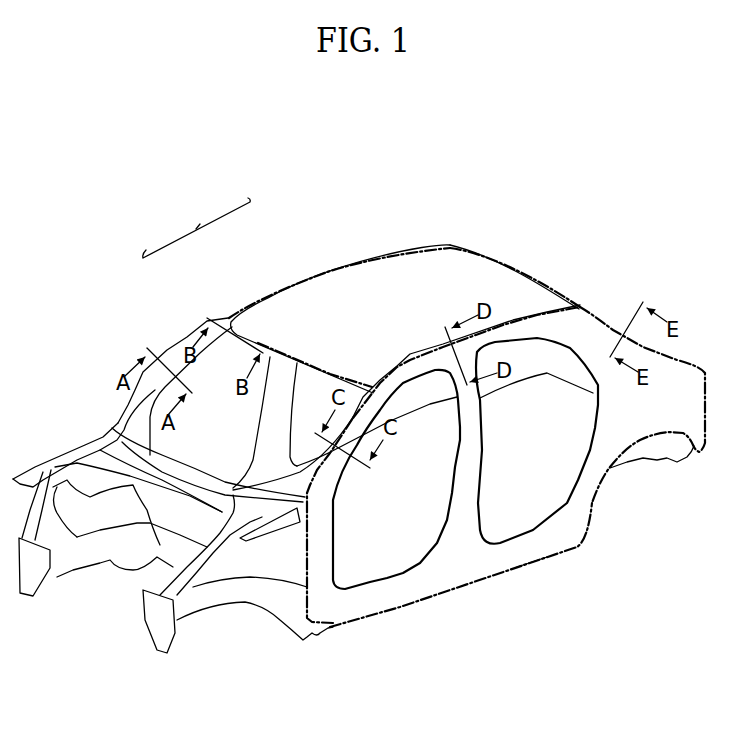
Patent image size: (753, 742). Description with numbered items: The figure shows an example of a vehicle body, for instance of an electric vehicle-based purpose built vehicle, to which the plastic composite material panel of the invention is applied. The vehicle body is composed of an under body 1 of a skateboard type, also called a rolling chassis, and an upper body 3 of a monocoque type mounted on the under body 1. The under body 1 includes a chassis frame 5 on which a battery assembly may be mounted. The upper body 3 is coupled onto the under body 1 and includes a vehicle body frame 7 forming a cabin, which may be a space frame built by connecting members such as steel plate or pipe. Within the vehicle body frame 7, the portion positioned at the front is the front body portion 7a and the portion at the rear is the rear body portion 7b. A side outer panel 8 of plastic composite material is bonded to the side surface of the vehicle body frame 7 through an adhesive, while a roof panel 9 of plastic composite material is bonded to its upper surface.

The under body 1 is at (312, 645).
The upper body 3 is at (600, 305).
The chassis frame 5 is at (331, 628).
The vehicle body frame 7 is at (349, 326).
The front body portion 7a is at (177, 353).
The rear body portion 7b is at (410, 249).
The side outer panel 8 is at (461, 586).
The roof panel 9 is at (511, 268).